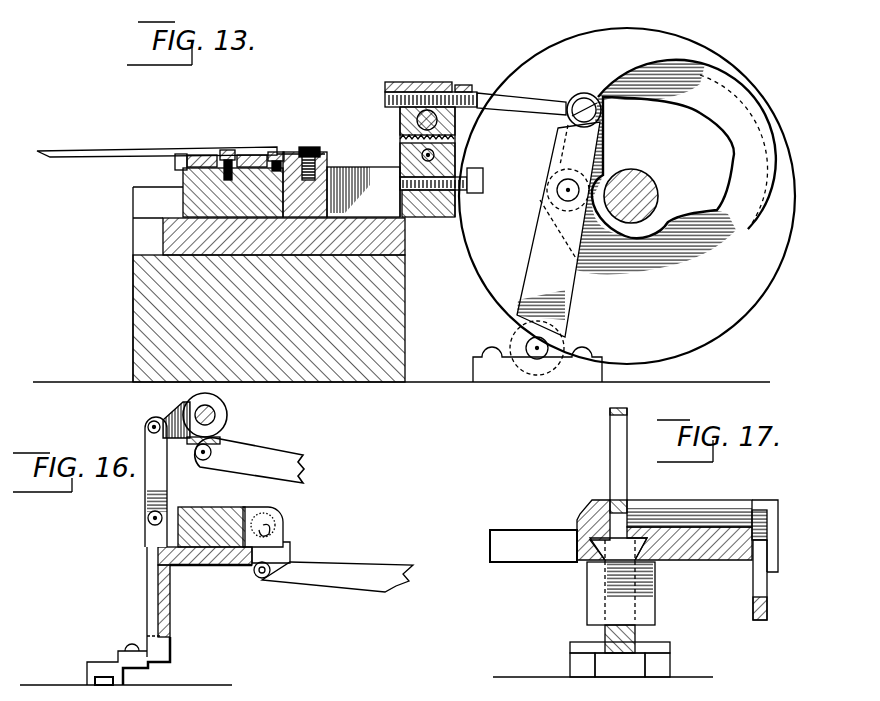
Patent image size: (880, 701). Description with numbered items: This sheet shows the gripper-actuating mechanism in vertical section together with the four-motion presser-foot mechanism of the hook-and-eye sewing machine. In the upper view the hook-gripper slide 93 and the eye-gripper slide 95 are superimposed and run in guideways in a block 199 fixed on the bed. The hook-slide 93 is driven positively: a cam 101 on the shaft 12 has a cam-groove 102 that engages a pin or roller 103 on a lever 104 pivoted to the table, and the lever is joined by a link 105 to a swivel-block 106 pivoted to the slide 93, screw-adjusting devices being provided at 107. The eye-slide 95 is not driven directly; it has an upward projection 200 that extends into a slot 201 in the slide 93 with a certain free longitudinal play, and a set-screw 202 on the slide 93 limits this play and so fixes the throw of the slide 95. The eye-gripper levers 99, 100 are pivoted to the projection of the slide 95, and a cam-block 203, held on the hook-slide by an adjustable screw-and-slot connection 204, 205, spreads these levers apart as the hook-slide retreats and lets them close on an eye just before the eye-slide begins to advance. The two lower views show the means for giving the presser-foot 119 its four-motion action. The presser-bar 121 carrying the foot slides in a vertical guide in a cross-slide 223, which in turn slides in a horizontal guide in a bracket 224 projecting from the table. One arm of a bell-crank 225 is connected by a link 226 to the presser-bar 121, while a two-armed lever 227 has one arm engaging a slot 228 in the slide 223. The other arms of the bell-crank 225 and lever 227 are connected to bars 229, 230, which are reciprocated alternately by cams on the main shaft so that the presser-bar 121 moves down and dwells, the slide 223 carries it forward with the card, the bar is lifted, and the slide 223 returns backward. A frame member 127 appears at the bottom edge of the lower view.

In FIG. 13, the shaft 12 is at (657, 182).
In FIG. 13, the hook-gripper slide 93 is at (455, 205).
In FIG. 13, the eye-gripper slide 95 is at (395, 237).
In FIG. 13, the eye-gripper lever 99 is at (287, 152).
In FIG. 13, the eye-gripper lever 100 is at (327, 150).
In FIG. 13, the cam 101 is at (627, 196).
In FIG. 13, the cam-groove 102 is at (693, 78).
In FIG. 13, the pin or roller 103 is at (577, 212).
In FIG. 13, the lever 104 is at (555, 248).
In FIG. 13, the link 105 is at (507, 100).
In FIG. 13, the swivel-block 106 is at (398, 117).
In FIG. 13, the screw-adjusting devices 107 is at (460, 83).
In FIG. 16, the presser-foot 119 is at (97, 660).
In FIG. 17, the presser-foot 119 is at (620, 659).
In FIG. 16, the presser-bar 121 is at (150, 583).
In FIG. 17, the presser-bar 121 is at (607, 632).
In FIG. 16, the frame 127 is at (176, 697).
In FIG. 13, the block 199 is at (385, 316).
In FIG. 13, the upward projection 200 is at (333, 190).
In FIG. 13, the slot 201 is at (367, 160).
In FIG. 13, the set-screw 202 is at (492, 166).
In FIG. 13, the cam-block 203 is at (197, 155).
In FIG. 13, the screw 204 is at (175, 168).
In FIG. 13, the slot 205 is at (242, 155).
In FIG. 16, the cross-slide 223 is at (223, 567).
In FIG. 17, the cross-slide 223 is at (596, 568).
In FIG. 16, the bracket 224 is at (232, 500).
In FIG. 17, the bracket 224 is at (695, 550).
In FIG. 16, the bell-crank 225 is at (175, 418).
In FIG. 16, the link 226 is at (148, 480).
In FIG. 17, the link 226 is at (613, 452).
In FIG. 16, the two-armed lever 227 is at (282, 527).
In FIG. 17, the two-armed lever 227 is at (703, 515).
In FIG. 16, the slot 228 is at (255, 580).
In FIG. 16, the bar 229 is at (272, 460).
In FIG. 16, the bar 230 is at (385, 567).
In FIG. 17, the bar 230 is at (755, 590).